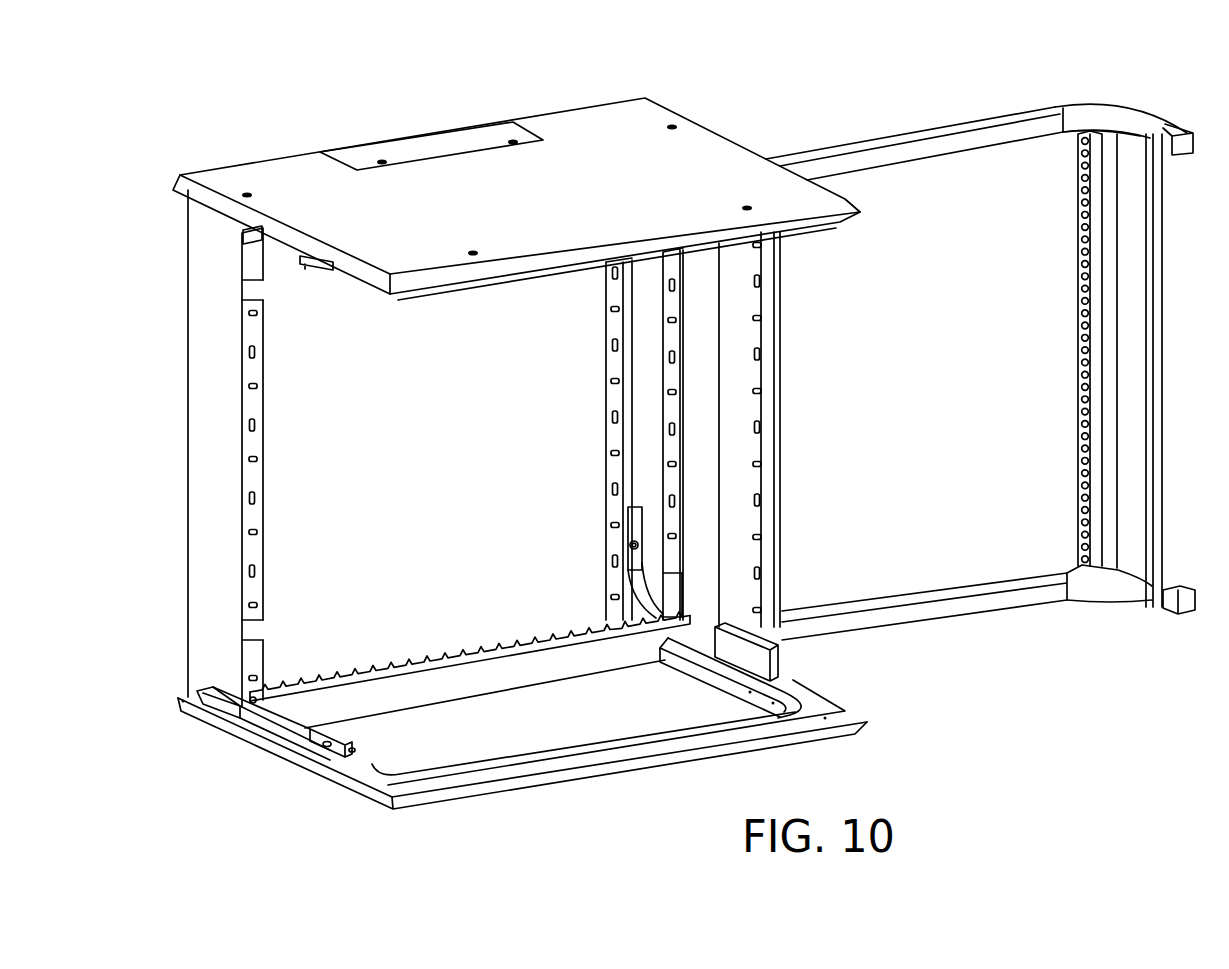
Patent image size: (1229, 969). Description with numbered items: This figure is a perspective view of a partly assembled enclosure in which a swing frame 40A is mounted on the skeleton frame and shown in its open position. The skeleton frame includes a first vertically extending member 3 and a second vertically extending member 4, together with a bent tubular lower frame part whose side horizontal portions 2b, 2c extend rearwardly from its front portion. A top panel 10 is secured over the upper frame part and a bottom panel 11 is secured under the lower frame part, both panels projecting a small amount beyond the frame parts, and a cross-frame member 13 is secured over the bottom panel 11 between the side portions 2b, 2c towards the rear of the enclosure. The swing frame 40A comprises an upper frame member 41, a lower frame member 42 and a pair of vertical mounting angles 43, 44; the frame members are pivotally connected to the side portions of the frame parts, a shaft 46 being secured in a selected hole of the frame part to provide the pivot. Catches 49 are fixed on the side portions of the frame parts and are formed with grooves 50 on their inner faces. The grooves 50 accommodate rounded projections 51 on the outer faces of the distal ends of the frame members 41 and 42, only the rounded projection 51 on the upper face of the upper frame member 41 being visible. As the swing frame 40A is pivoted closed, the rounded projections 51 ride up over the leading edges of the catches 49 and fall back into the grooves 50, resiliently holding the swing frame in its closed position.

The top panel 10 is at (504, 200).
The bottom panel 11 is at (569, 734).
The cross-frame member 13 is at (518, 668).
The side horizontal portion of lower frame part 2b is at (727, 683).
The side horizontal portion of lower frame part 2c is at (381, 758).
The first vertically extending member 3 is at (638, 405).
The second vertically extending member 4 is at (210, 502).
The swing frame 40A is at (945, 172).
The upper frame member 41 is at (948, 143).
The lower frame member 42 is at (962, 583).
The vertical mounting angle 43 is at (748, 408).
The vertical mounting angle 44 is at (1137, 310).
The shaft 46 is at (758, 653).
The catch 49 is at (303, 266).
The groove 50 is at (352, 753).
The rounded projection 51 is at (1162, 120).